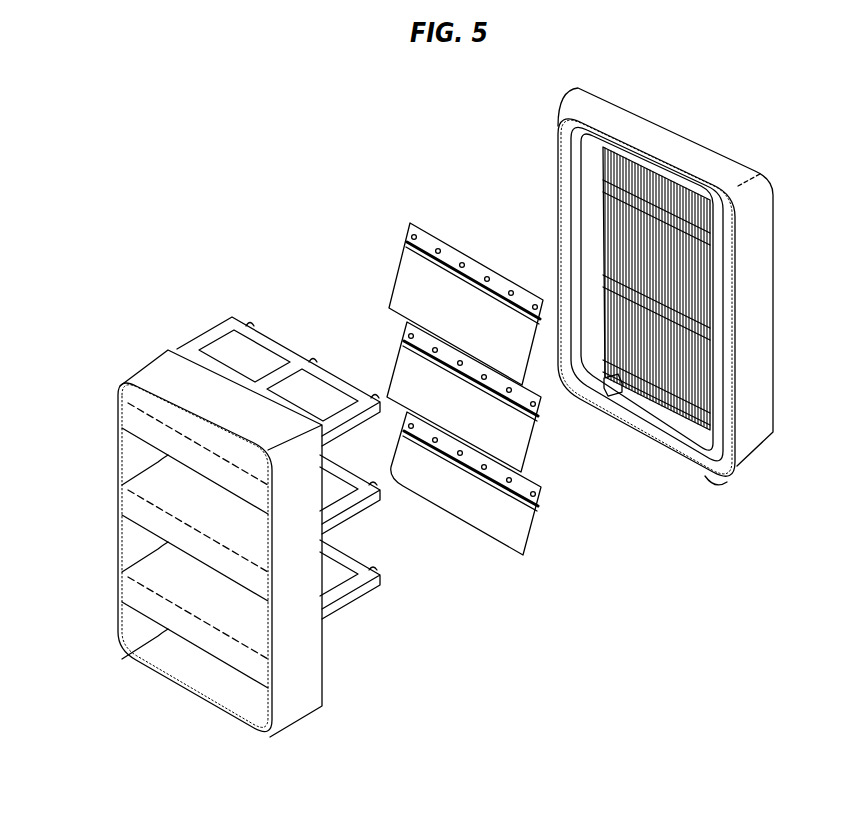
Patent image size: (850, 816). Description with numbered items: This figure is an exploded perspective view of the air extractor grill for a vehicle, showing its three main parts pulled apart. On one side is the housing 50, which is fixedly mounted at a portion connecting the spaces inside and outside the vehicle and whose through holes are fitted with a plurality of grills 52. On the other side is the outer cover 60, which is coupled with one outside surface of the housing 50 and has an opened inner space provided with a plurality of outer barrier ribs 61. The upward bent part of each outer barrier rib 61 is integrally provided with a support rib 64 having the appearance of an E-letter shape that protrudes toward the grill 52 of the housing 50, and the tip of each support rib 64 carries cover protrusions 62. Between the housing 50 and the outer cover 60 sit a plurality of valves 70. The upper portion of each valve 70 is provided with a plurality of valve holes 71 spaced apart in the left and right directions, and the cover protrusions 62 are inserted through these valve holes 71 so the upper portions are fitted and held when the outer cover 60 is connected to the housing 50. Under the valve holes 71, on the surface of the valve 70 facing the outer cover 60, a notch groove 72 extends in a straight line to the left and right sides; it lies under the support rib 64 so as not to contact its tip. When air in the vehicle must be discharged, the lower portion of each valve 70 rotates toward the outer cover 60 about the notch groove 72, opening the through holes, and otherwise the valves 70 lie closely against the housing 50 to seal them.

The housing 50 is at (765, 258).
The grill 52 is at (660, 177).
The outer cover 60 is at (155, 360).
The outer barrier rib 61 is at (133, 592).
The cover protrusion 62 is at (373, 397).
The support rib 64 is at (207, 332).
The valve 70 is at (483, 364).
The valve hole 71 is at (487, 278).
The notch groove 72 is at (420, 232).